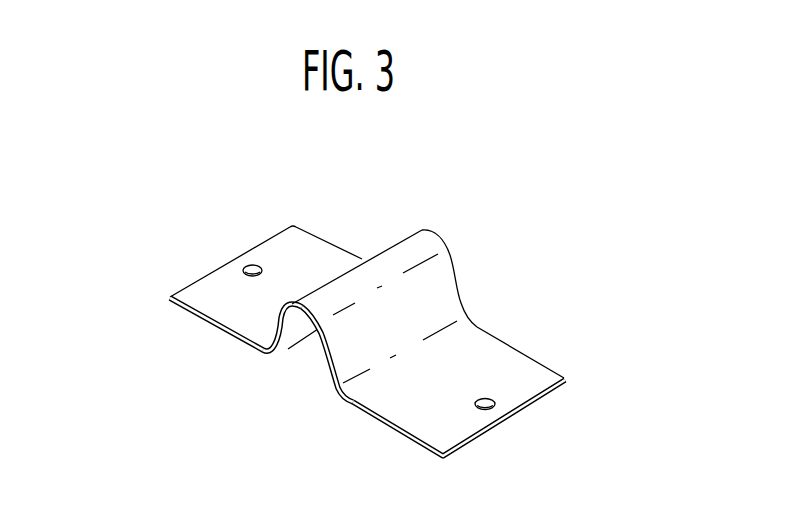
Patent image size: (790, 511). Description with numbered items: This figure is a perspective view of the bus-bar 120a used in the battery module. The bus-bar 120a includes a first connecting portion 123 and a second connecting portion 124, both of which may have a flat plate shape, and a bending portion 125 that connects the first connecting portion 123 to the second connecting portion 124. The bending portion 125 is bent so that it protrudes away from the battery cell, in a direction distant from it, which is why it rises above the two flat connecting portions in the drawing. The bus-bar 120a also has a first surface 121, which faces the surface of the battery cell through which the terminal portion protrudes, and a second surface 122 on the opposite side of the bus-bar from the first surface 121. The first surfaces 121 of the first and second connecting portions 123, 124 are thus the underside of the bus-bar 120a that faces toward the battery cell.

The bus-bar 120a is at (648, 153).
The first surface 121 is at (217, 327).
The second surface 122 is at (206, 289).
The first connecting portion 123 is at (349, 223).
The second connecting portion 124 is at (537, 325).
The bending portion 125 is at (470, 222).